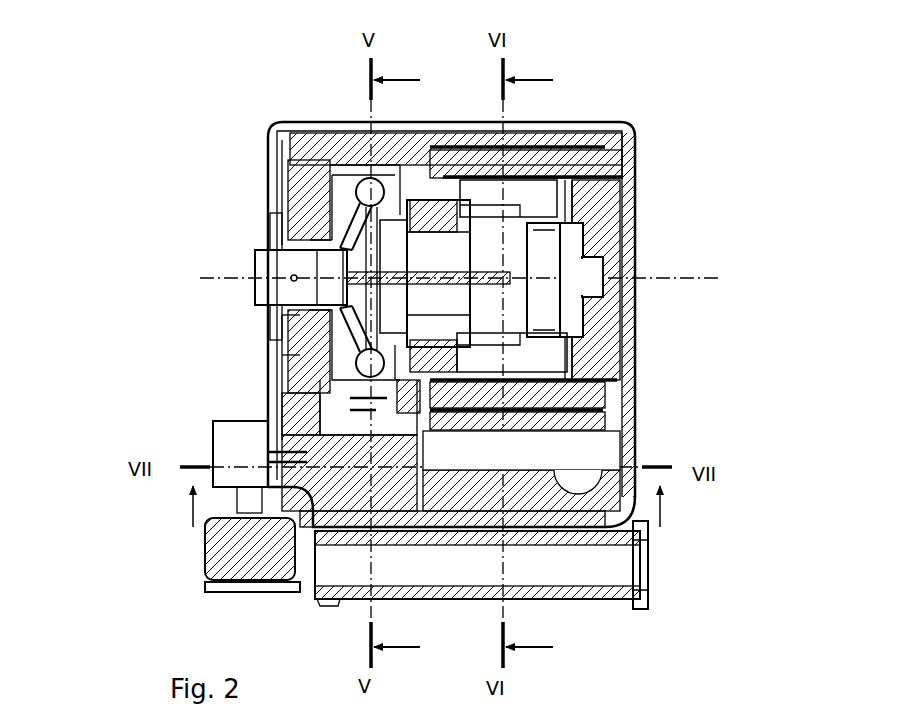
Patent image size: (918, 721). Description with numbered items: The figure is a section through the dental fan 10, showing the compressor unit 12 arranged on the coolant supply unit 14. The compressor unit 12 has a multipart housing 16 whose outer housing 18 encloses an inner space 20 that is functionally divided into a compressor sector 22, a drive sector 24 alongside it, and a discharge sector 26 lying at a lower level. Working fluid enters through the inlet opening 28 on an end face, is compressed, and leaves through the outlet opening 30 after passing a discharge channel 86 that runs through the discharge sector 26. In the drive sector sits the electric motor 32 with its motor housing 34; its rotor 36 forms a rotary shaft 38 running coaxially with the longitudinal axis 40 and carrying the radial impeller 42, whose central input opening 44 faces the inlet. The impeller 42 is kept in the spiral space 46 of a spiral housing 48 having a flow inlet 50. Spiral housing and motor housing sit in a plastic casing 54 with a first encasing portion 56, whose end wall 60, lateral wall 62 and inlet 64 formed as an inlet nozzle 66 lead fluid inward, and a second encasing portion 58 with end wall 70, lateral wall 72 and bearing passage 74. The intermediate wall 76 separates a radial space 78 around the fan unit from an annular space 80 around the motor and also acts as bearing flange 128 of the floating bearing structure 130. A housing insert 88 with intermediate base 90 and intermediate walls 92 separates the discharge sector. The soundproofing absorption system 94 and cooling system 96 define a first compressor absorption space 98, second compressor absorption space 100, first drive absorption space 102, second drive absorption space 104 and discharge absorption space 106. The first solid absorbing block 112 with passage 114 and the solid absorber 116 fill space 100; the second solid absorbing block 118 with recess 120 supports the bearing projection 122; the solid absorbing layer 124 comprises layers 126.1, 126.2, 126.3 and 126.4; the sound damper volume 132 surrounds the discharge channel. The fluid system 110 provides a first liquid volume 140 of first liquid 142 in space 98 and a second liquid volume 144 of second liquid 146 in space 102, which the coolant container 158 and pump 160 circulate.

The fan 10 is at (148, 50).
The compressor unit 12 is at (655, 242).
The coolant supply unit 14 is at (655, 585).
The housing 16 is at (640, 278).
The outer housing 18 is at (640, 320).
The inner space 20 is at (322, 560).
The compressor sector 22 is at (330, 133).
The drive sector 24 is at (555, 135).
The discharge sector 26 is at (560, 585).
The inlet opening 28 is at (275, 270).
The outlet opening 30 is at (210, 440).
The electric motor 32 is at (640, 235).
The motor housing 34 is at (400, 310).
The rotor 36 is at (465, 252).
The rotary shaft 38 is at (385, 250).
The longitudinal axis 40 is at (255, 280).
The radial impeller 42 is at (268, 228).
The input opening 44 is at (268, 300).
The spiral space 46 is at (290, 155).
The spiral housing 48 is at (290, 180).
The flow inlet 50 is at (290, 330).
The casing 54 is at (405, 130).
The first encasing portion 56 is at (350, 135).
The second encasing portion 58 is at (457, 135).
The end wall 60 is at (290, 390).
The lateral wall 62 is at (300, 135).
The inlet 64 is at (255, 315).
The inlet nozzle 66 is at (260, 285).
The end wall 70 is at (640, 200).
The lateral wall 72 is at (515, 135).
The bearing passage 74 is at (640, 215).
The intermediate wall 76 is at (412, 135).
The radial space 78 is at (265, 140).
The annular space 80 is at (620, 135).
The discharge channel 86 is at (650, 572).
The housing insert 88 is at (640, 450).
The intermediate base 90 is at (640, 432).
The intermediate walls 92 is at (430, 455).
The soundproofing absorption system 94 is at (640, 365).
The cooling system 96 is at (215, 495).
The first compressor absorption space 98 is at (330, 400).
The second compressor absorption space 100 is at (310, 380).
The first drive absorption space 102 is at (575, 480).
The second drive absorption space 104 is at (640, 388).
The discharge absorption space 106 is at (640, 505).
The fluid system 110 is at (270, 545).
The first solid absorbing block 112 is at (290, 372).
The passage 114 is at (290, 355).
The solid absorber 116 is at (410, 530).
The second solid absorbing block 118 is at (640, 175).
The recess 120 is at (640, 265).
The bearing projection 122 is at (640, 295).
The solid absorbing layer 124 is at (640, 410).
The first layer 126.1 is at (475, 135).
The second layer 126.2 is at (540, 135).
The third layer 126.3 is at (608, 130).
The fourth layer 126.4 is at (585, 135).
The bearing flange 128 is at (375, 135).
The bearing structure 130 is at (640, 345).
The sound damper volume 132 is at (452, 575).
The first liquid volume 140 is at (300, 212).
The first liquid 142 is at (290, 140).
The second liquid volume 144 is at (498, 286).
The second liquid 146 is at (545, 286).
The coolant container 158 is at (540, 565).
The pump 160 is at (215, 560).